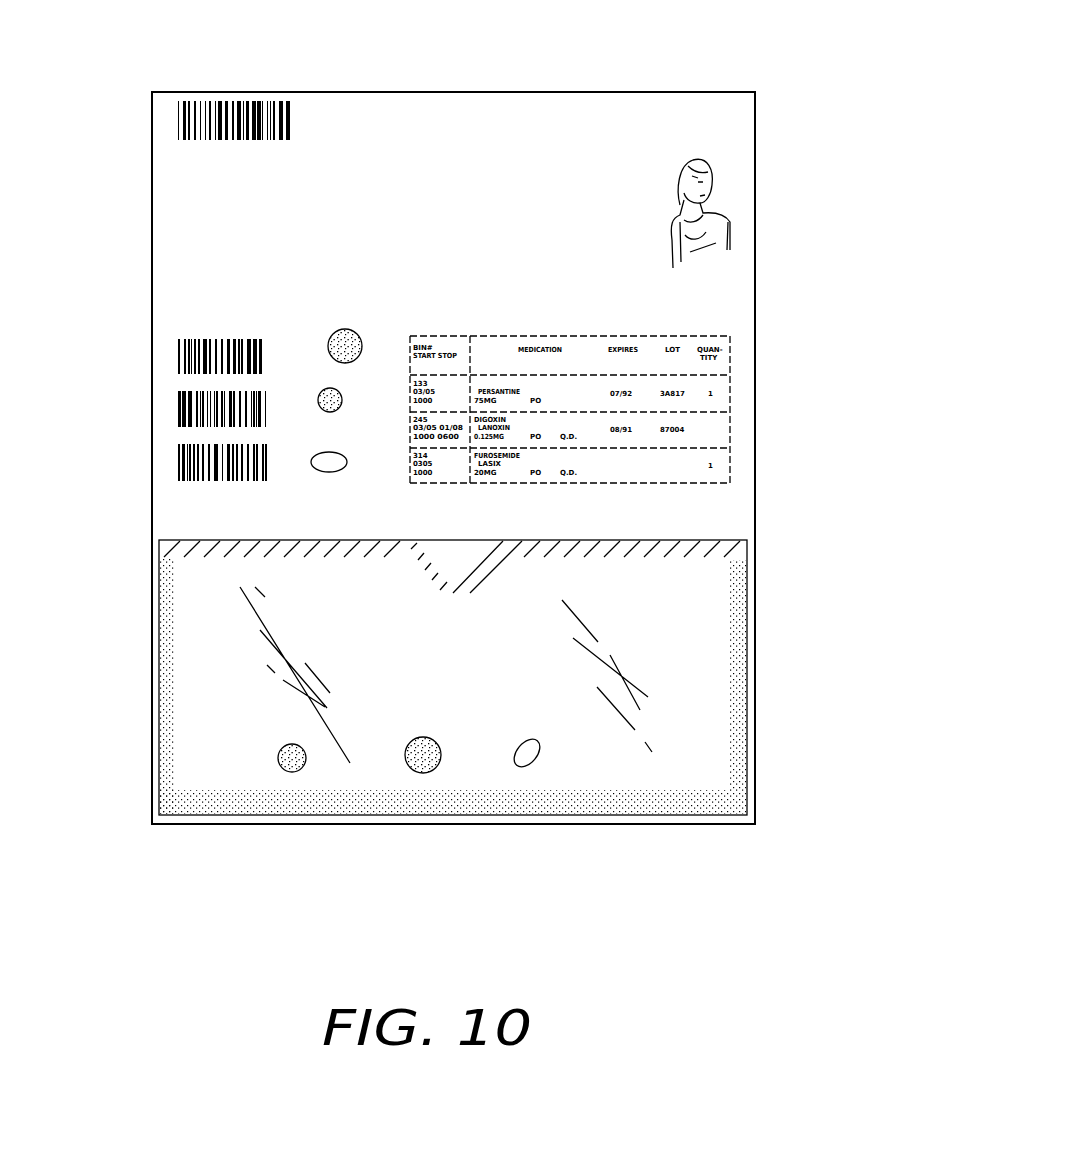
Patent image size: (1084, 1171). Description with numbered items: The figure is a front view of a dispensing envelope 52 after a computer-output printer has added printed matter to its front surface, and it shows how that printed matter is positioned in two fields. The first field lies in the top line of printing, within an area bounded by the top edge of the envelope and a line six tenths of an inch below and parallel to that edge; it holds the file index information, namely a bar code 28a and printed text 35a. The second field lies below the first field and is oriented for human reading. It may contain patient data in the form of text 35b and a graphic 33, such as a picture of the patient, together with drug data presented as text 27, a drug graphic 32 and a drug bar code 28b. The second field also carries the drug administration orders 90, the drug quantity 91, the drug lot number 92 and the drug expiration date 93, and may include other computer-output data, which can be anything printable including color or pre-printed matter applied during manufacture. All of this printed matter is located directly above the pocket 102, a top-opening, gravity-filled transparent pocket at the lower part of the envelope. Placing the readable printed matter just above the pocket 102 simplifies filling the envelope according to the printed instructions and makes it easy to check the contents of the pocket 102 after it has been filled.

The file index bar code 28a is at (212, 110).
The file index text 35a is at (419, 112).
The patient data text 35b is at (475, 188).
The patient graphic 33 is at (707, 212).
The drug graphic 32 is at (328, 340).
The drug bar code 28b is at (178, 407).
The drug data text 27 is at (540, 382).
The drug administration orders 90 is at (580, 403).
The drug quantity 91 is at (715, 430).
The drug lot number 92 is at (673, 473).
The drug expiration date 93 is at (627, 475).
The dispensing envelope 52 is at (115, 664).
The pocket 102 is at (562, 702).